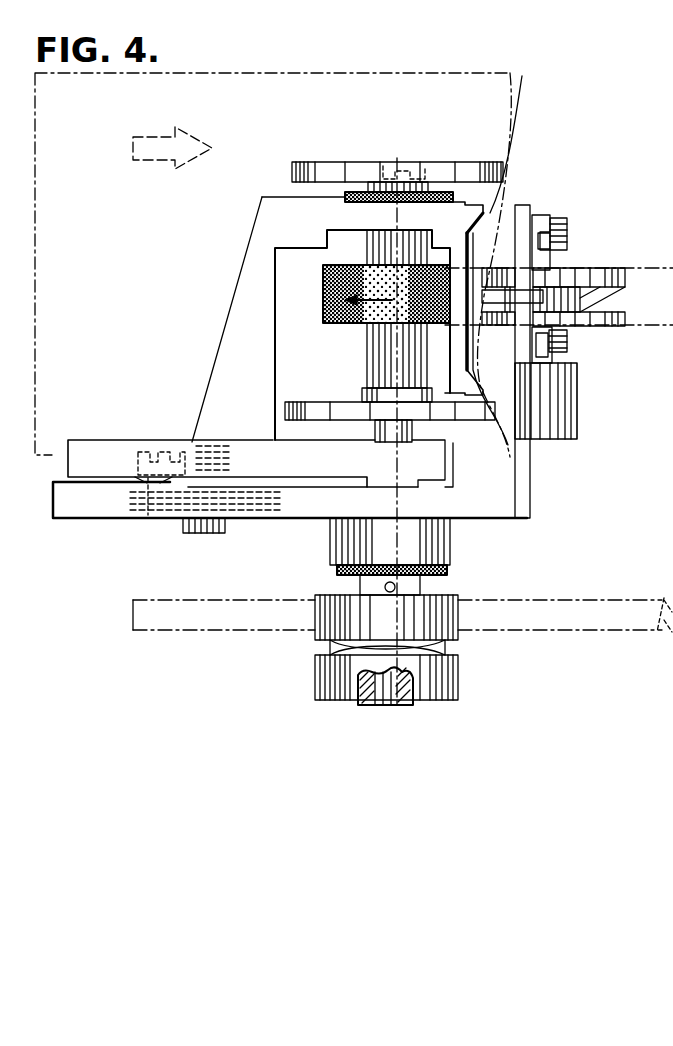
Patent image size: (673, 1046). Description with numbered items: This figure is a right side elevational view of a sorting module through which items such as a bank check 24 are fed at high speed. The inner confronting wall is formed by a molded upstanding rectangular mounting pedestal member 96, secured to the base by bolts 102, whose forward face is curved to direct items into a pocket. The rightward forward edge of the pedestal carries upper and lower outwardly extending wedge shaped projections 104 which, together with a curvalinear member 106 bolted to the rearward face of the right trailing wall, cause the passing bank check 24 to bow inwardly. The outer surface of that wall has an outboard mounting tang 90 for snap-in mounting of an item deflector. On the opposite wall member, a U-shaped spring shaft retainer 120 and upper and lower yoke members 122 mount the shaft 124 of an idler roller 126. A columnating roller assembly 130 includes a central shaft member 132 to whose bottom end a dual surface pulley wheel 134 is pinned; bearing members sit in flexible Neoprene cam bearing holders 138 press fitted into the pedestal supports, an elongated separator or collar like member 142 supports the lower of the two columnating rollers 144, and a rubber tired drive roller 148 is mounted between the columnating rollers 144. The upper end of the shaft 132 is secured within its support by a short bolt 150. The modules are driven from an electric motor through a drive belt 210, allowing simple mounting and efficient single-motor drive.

The bank check 24 is at (382, 126).
The outboard mounting tang 90 is at (562, 410).
The mounting pedestal member 96 is at (252, 426).
The bolts 102 is at (140, 452).
The wedge shaped projections 104 is at (482, 218).
The curvalinear member 106 is at (538, 290).
The U-shaped spring shaft retainer 120 is at (566, 234).
The yoke members 122 is at (550, 242).
The shaft 124 is at (542, 244).
The idler roller 126 is at (626, 276).
The columnating roller assembly 130 is at (292, 162).
The central shaft member 132 is at (385, 703).
The dual surface pulley wheel 134 is at (315, 640).
The flexible Neoprene cam bearing holder 138 is at (350, 192).
The separator or collar like member 142 is at (393, 432).
The columnating rollers 144 is at (325, 163).
The rubber tired drive roller 148 is at (332, 323).
The short bolt 150 is at (398, 166).
The drive belt 210 is at (563, 632).